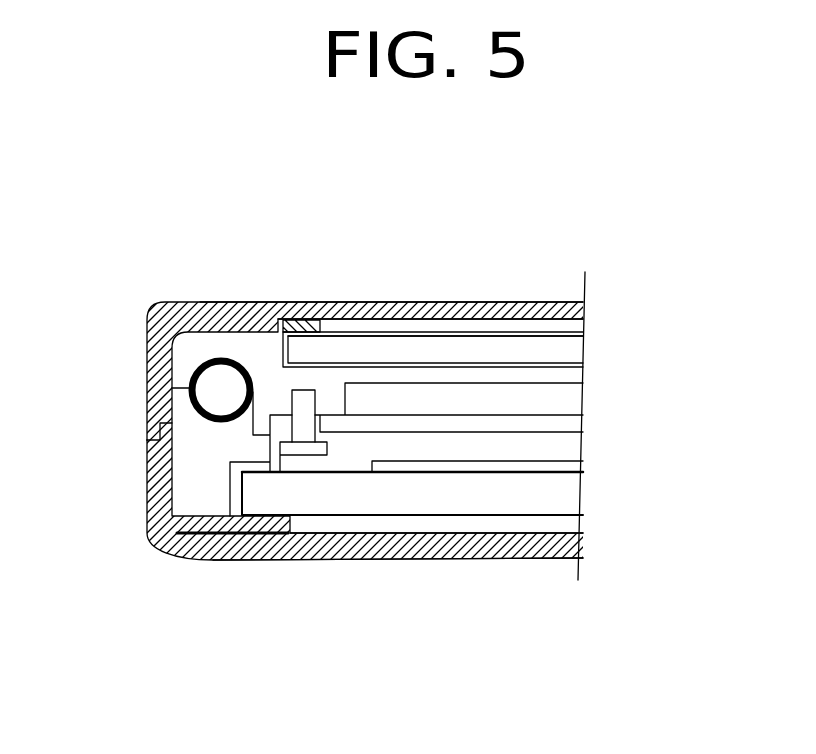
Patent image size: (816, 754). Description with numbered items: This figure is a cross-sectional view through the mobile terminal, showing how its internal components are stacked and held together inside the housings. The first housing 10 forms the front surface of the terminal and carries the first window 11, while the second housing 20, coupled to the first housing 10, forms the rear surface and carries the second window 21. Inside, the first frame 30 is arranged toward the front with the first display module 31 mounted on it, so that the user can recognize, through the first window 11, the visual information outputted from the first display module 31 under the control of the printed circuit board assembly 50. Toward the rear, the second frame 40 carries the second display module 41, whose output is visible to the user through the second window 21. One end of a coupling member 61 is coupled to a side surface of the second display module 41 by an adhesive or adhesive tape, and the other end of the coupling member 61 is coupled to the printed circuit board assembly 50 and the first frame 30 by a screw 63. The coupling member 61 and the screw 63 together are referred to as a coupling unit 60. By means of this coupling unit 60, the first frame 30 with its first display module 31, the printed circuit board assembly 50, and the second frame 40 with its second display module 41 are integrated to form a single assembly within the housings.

The first housing 10 is at (153, 360).
The first window 11 is at (398, 302).
The second housing 20 is at (153, 488).
The second window 21 is at (415, 548).
The first frame 30 is at (560, 375).
The first display module 31 is at (463, 343).
The second frame 40 is at (572, 463).
The second display module 41 is at (567, 502).
The printed circuit board assembly 50 is at (565, 425).
The coupling unit 60 is at (259, 543).
The coupling member 61 is at (230, 485).
The screw 63 is at (305, 430).